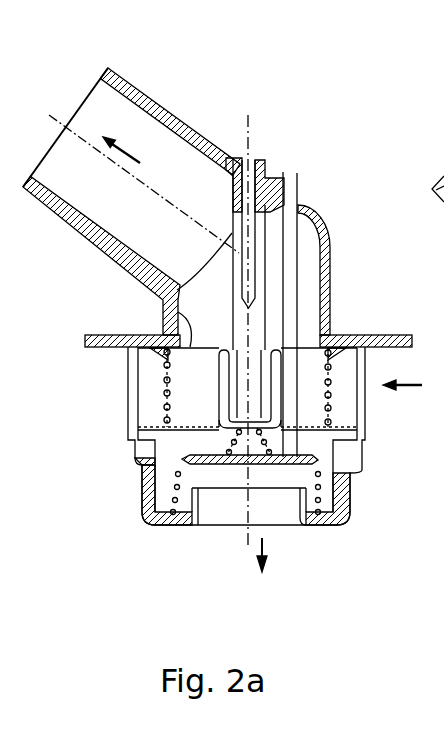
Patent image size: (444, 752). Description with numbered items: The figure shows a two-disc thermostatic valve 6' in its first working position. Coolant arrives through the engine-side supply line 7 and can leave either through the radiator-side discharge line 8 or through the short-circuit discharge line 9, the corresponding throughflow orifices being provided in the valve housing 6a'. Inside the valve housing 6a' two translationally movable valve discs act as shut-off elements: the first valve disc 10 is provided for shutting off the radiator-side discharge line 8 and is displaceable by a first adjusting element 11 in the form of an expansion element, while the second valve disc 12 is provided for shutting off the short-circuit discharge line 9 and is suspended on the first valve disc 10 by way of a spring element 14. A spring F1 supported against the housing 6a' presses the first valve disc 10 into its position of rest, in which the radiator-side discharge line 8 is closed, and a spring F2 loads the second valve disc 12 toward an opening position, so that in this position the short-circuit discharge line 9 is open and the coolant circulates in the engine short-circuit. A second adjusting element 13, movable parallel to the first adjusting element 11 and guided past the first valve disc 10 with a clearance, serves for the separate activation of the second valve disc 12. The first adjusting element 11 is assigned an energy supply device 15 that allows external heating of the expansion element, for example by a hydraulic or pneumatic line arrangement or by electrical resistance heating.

The two-disc thermostatic valve 6' is at (371, 185).
The valve housing 6a' is at (282, 423).
The engine-side supply line 7 is at (416, 396).
The radiator-side discharge line 8 is at (126, 161).
The short-circuit discharge line 9 is at (270, 552).
The first valve disc 10 is at (178, 313).
The first adjusting element 11 is at (262, 252).
The second valve disc 12 is at (228, 468).
The second adjusting element 13 is at (292, 273).
The spring element 14 is at (240, 437).
The energy supply device 15 is at (252, 153).
The spring F1 is at (168, 381).
The spring F2 is at (170, 492).